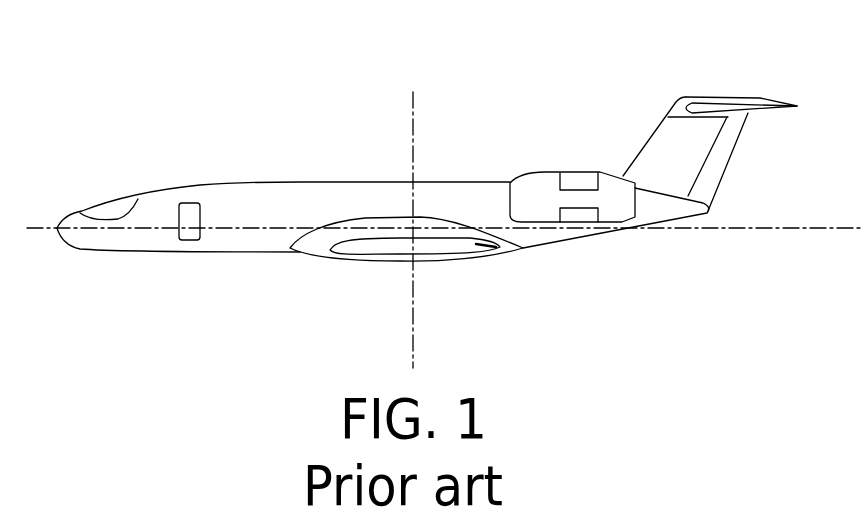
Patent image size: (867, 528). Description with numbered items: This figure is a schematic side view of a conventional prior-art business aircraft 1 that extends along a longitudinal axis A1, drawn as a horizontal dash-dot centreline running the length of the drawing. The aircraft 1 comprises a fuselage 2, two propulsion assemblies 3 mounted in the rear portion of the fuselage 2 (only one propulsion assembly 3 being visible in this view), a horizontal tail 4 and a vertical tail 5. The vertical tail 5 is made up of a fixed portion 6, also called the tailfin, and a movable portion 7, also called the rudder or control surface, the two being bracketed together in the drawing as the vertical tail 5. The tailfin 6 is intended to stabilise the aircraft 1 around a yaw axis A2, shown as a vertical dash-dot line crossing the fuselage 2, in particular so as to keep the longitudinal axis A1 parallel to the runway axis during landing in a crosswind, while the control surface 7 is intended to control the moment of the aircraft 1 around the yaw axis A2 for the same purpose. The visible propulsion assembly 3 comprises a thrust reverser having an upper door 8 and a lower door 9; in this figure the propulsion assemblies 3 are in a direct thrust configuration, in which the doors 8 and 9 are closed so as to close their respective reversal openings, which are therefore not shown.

The business aircraft 1 is at (283, 108).
The fuselage 2 is at (237, 235).
The propulsion assembly 3 is at (564, 209).
The horizontal tail 4 is at (780, 100).
The vertical tail 5 is at (718, 186).
The fixed portion 6 is at (668, 170).
The movable portion 7 is at (717, 163).
The upper door 8 is at (580, 177).
The lower door 9 is at (582, 227).
The longitudinal axis A1 is at (33, 222).
The yaw axis A2 is at (410, 362).